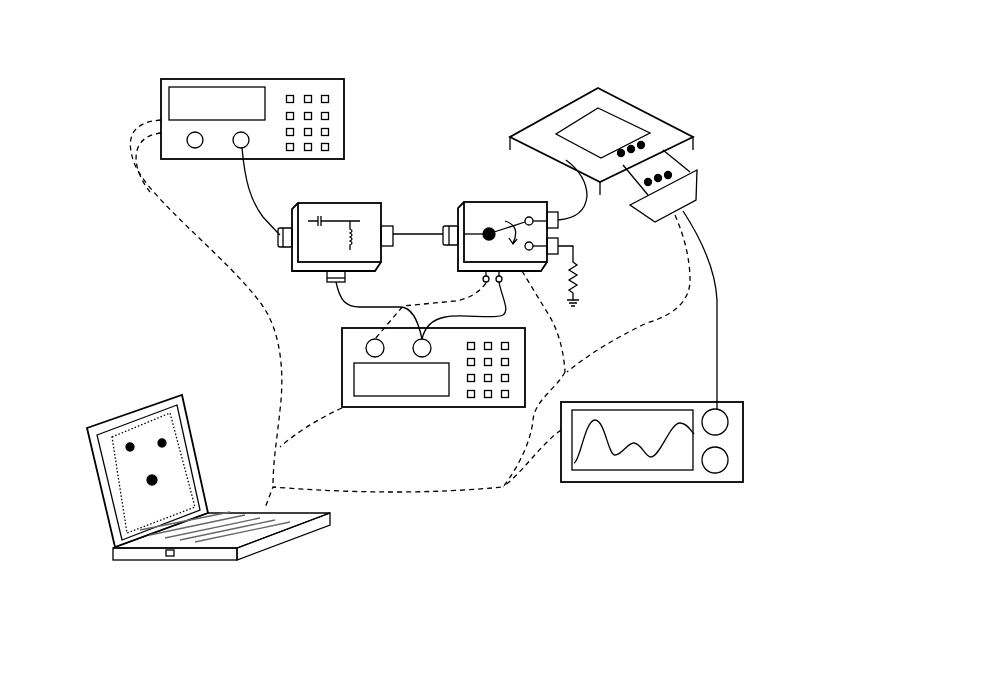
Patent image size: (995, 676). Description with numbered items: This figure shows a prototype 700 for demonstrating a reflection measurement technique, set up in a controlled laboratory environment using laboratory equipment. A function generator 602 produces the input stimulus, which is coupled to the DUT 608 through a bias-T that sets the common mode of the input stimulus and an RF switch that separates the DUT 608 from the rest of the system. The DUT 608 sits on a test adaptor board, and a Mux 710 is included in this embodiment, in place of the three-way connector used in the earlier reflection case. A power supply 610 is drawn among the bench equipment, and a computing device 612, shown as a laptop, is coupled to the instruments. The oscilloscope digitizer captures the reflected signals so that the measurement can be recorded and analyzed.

The prototype 700 is at (92, 30).
The function generator 602 is at (158, 97).
The DUT 608 is at (571, 118).
The power supply 610 is at (342, 373).
The computing device 612 is at (168, 396).
The Mux 710 is at (662, 221).